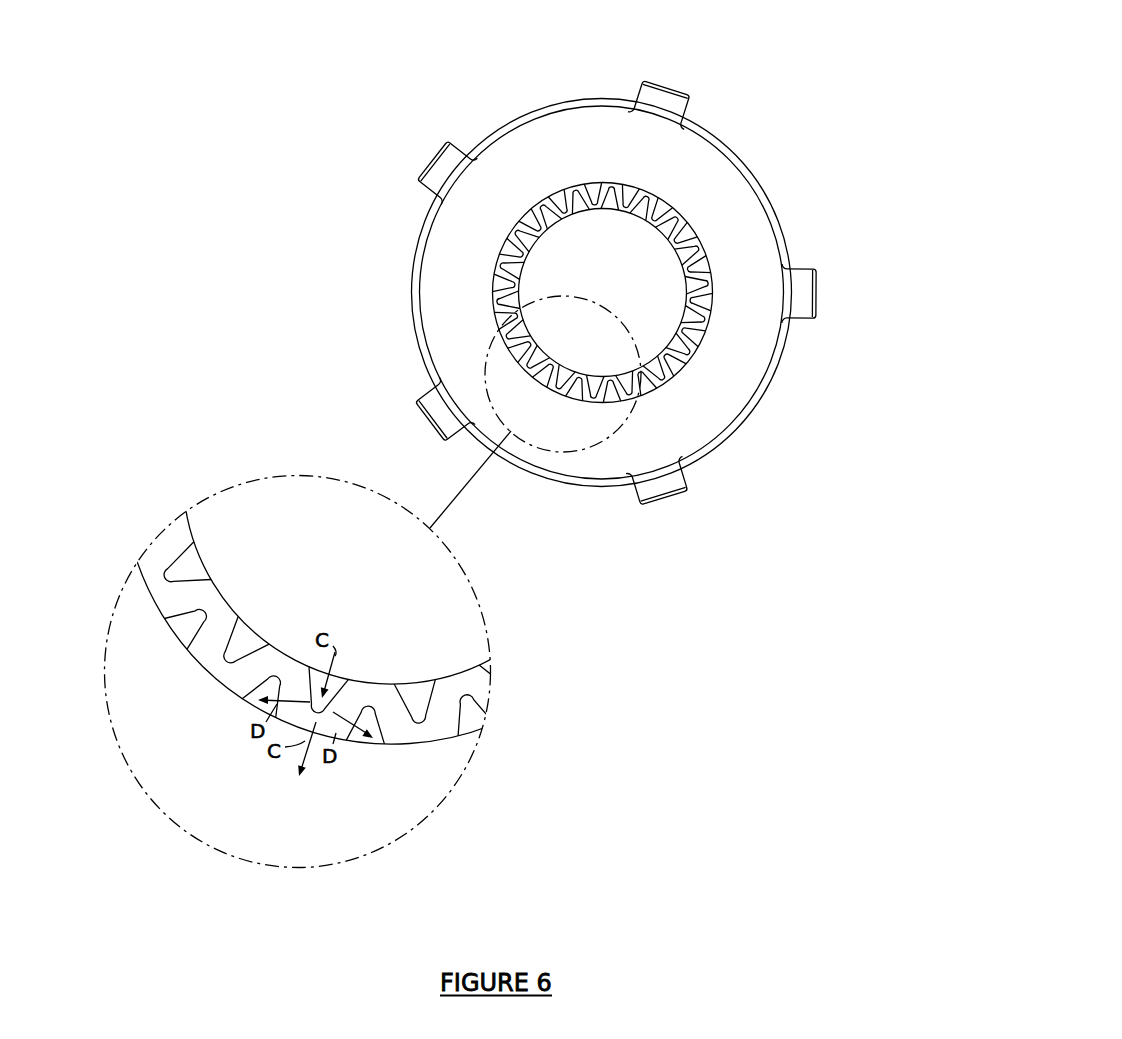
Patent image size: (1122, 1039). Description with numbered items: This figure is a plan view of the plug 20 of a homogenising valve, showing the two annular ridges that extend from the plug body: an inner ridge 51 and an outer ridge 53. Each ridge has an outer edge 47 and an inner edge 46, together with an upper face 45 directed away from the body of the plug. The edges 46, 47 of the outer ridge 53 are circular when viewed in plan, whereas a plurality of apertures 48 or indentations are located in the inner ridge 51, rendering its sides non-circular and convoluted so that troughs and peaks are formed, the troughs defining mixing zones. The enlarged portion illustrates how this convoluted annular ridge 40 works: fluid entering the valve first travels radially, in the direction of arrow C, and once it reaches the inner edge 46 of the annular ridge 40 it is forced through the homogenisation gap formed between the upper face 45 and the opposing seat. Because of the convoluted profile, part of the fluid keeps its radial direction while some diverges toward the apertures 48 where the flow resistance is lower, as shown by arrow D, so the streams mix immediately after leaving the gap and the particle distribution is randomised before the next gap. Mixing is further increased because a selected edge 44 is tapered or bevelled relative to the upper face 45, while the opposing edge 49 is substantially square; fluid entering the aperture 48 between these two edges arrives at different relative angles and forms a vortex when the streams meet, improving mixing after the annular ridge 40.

The plug 20 is at (626, 413).
The annular ridge 40 is at (417, 488).
The tapered edge 44 is at (167, 625).
The upper face 45 is at (527, 218).
The inner edge 46 is at (556, 116).
The outer edge 47 is at (562, 100).
The apertures 48 is at (669, 364).
The opposing edge 49 is at (181, 656).
The inner ridge 51 is at (466, 488).
The outer ridge 53 is at (792, 363).